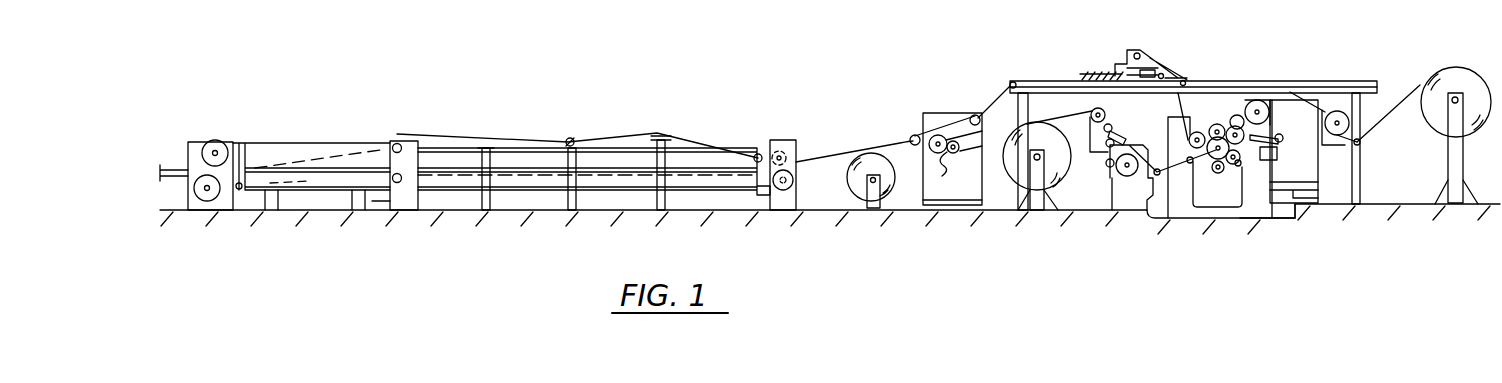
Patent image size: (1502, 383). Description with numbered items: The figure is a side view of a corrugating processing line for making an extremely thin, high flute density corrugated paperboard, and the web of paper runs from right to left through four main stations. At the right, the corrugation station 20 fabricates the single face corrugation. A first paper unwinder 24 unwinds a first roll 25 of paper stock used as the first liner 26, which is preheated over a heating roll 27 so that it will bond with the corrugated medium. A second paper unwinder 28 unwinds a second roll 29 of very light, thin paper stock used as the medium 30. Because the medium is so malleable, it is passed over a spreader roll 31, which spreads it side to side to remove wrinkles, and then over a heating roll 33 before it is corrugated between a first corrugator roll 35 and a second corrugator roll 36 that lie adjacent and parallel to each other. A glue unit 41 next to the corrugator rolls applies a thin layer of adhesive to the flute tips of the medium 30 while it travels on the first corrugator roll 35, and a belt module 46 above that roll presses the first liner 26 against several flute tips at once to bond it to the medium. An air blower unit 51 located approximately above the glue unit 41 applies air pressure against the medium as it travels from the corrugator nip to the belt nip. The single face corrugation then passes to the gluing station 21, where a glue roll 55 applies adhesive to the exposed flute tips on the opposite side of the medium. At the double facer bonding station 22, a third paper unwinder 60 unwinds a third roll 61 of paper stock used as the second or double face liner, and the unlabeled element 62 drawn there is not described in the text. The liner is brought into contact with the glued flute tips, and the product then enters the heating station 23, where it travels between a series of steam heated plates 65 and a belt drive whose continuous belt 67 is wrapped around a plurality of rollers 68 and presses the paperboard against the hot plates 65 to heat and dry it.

The corrugation station 20 is at (1243, 156).
The gluing station 21 is at (948, 130).
The double facer bonding station 22 is at (796, 142).
The heating station 23 is at (573, 139).
The first paper unwinder 24 is at (1448, 155).
The first roll 25 is at (1442, 119).
The first liner 26 is at (1418, 88).
The heating roll 27 is at (1332, 111).
The second paper unwinder 28 is at (1019, 191).
The second roll 29 is at (1020, 186).
The medium 30 is at (1052, 125).
The spreader roll 31 is at (1105, 112).
The heating roll 33 is at (1163, 163).
The first corrugator roll 35 is at (1224, 124).
The second corrugator roll 36 is at (1262, 218).
The glue unit 41 is at (1272, 160).
The belt module 46 is at (1206, 131).
The air blower unit 51 is at (1270, 119).
The glue roll 55 is at (955, 159).
The third paper unwinder 60 is at (887, 207).
The third roll 61 is at (893, 197).
The web 62 is at (823, 167).
The steam heated plates 65 is at (496, 162).
The continuous belt 67 is at (693, 140).
The rollers 68 is at (397, 143).